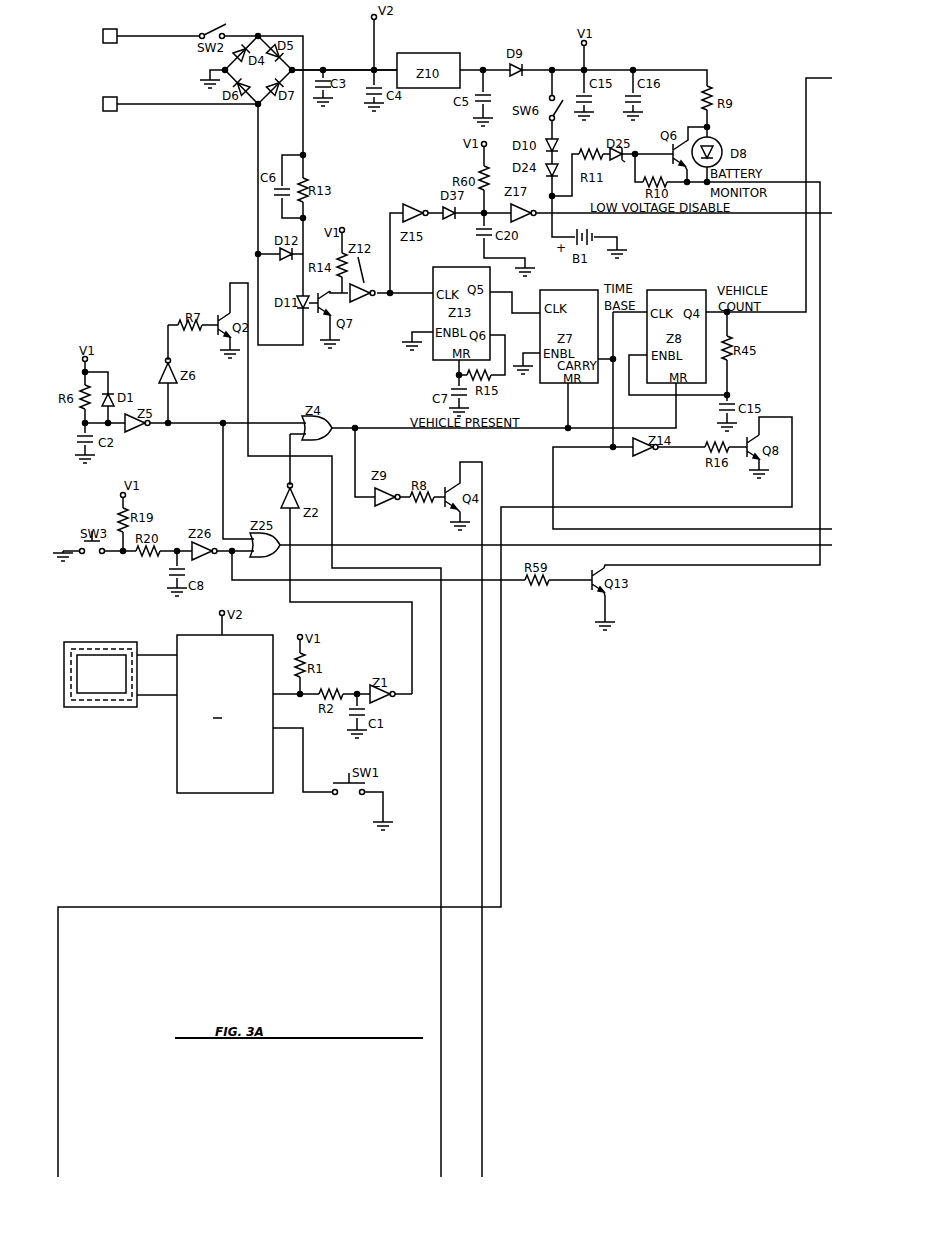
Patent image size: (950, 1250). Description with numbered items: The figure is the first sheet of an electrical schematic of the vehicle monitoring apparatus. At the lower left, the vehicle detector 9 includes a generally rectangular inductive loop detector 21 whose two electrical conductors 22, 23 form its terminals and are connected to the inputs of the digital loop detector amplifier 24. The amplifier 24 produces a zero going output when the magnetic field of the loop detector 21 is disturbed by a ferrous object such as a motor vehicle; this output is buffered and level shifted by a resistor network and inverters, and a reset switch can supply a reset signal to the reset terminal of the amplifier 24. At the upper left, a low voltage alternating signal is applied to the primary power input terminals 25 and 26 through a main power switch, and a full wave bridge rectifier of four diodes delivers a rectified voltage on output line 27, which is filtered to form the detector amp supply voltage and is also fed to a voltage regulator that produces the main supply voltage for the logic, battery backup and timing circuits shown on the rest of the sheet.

The primary power input terminal 25 is at (103, 35).
The primary power input terminal 26 is at (103, 104).
The output line 27 is at (338, 70).
The vehicle detector 9 is at (122, 643).
The inductive loop detector 21 is at (92, 695).
The electrical conductor 22 is at (145, 657).
The electrical conductor 23 is at (150, 696).
The digital loop detector amplifier 24 is at (225, 714).